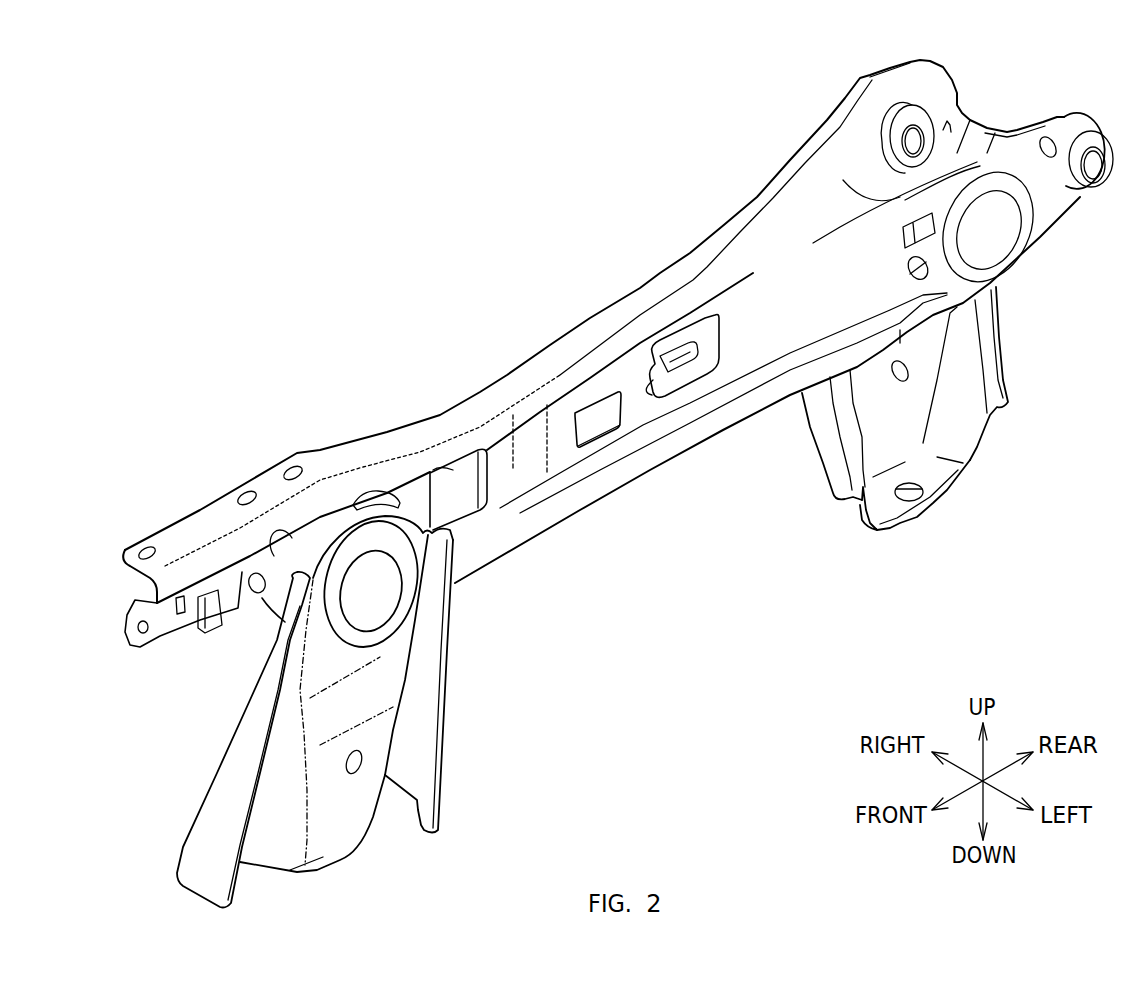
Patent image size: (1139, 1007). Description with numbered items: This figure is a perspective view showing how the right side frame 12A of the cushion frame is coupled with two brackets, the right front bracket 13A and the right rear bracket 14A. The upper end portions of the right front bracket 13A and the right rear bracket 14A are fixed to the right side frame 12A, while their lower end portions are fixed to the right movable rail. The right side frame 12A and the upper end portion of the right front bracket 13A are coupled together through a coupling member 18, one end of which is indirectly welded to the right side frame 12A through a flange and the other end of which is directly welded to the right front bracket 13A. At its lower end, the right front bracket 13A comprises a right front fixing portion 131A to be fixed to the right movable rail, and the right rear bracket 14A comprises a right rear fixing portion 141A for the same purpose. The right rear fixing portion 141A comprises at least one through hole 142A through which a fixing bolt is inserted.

The right side frame 12A is at (590, 312).
The right front bracket 13A is at (368, 683).
The right front fixing portion 131A is at (280, 843).
The coupling member 18 is at (402, 588).
The right rear bracket 14A is at (958, 427).
The right rear fixing portion 141A is at (885, 508).
The through hole 142A is at (922, 481).